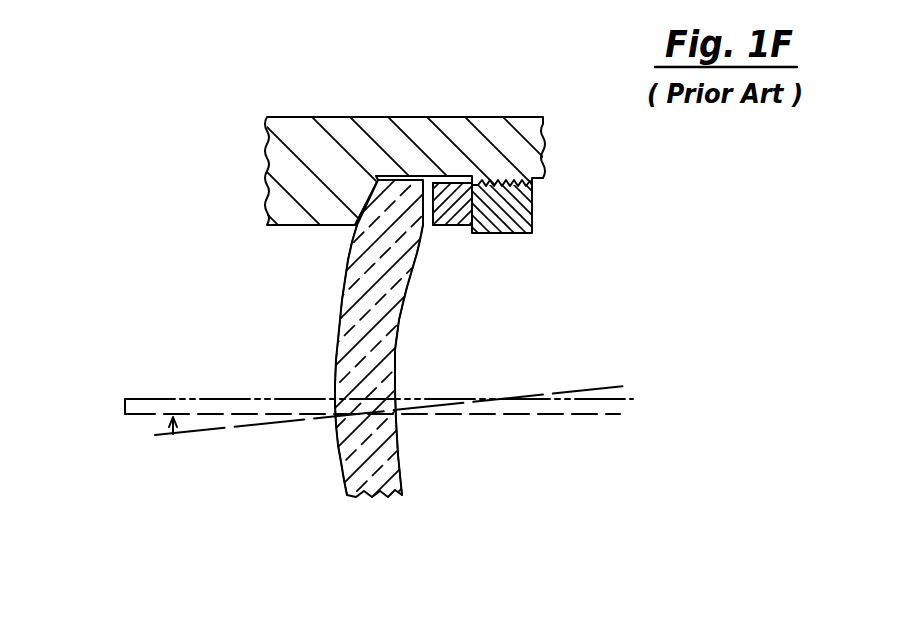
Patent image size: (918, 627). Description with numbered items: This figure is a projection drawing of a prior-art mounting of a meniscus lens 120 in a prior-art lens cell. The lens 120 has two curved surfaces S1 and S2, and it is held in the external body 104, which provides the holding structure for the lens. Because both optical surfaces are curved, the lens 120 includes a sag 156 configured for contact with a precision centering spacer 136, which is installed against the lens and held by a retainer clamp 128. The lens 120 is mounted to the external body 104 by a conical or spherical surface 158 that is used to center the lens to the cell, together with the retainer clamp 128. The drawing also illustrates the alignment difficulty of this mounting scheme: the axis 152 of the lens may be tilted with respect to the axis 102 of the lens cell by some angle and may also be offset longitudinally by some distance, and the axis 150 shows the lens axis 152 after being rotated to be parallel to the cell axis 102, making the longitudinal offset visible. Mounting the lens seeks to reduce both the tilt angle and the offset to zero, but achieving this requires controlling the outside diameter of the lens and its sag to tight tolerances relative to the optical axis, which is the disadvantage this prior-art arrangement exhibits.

The external body 104 is at (463, 117).
The retainer clamp 128 is at (666, 213).
The precision centering spacer 136 is at (463, 227).
The meniscus lens 120 is at (403, 322).
The sag 156 is at (433, 228).
The conical or spherical surface 158 is at (356, 228).
The first lens surface S1 is at (466, 350).
The second lens surface S2 is at (289, 331).
The axis of the lens cell 102 is at (190, 397).
The rotated lens axis 150 is at (237, 416).
The axis of the lens 152 is at (193, 434).